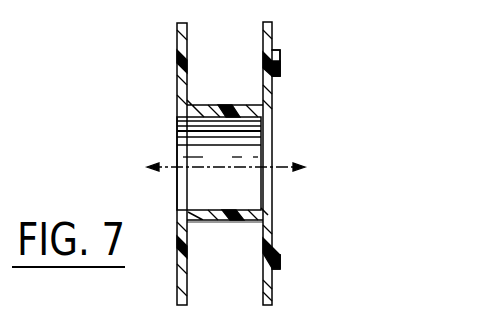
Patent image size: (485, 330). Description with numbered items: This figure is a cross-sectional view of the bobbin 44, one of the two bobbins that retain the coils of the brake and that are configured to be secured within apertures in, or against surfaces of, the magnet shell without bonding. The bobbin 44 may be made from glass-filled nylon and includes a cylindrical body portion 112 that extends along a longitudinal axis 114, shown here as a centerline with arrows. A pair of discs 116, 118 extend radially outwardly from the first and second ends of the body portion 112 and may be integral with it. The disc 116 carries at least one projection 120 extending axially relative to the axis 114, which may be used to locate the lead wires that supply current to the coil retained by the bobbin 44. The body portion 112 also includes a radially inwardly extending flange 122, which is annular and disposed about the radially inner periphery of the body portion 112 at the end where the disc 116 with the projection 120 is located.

The bobbin 44 is at (300, 46).
The cylindrical body portion 112 is at (225, 242).
The longitudinal axis 114 is at (277, 165).
The disc 116 is at (272, 298).
The disc 118 is at (187, 303).
The projection 120 is at (278, 247).
The flange 122 is at (267, 203).